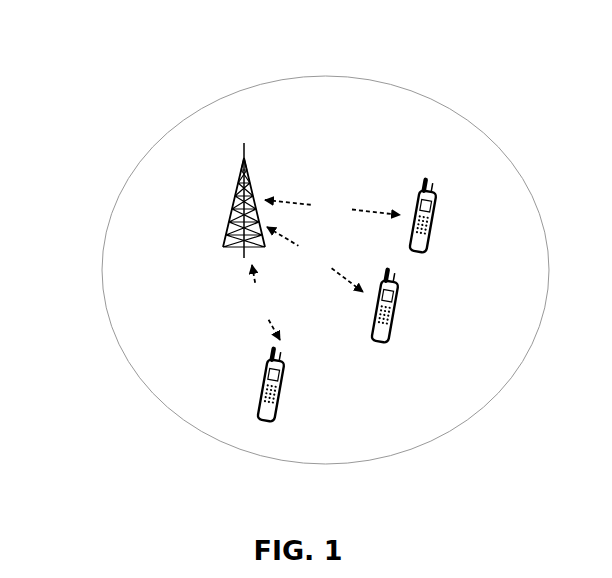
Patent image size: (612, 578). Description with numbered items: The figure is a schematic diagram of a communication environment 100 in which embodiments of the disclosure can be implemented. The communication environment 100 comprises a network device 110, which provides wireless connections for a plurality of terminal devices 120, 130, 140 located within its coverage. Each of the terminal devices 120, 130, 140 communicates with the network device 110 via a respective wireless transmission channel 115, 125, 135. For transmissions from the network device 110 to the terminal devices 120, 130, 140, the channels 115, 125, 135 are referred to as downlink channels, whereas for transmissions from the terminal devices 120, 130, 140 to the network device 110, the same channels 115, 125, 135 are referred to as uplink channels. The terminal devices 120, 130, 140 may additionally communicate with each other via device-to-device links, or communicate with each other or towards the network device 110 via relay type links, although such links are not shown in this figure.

The communication environment 100 is at (148, 48).
The network device 110 is at (246, 166).
The terminal device 120 is at (432, 200).
The terminal device 130 is at (394, 303).
The terminal device 140 is at (282, 399).
The wireless transmission channel 115 is at (332, 207).
The wireless transmission channel 125 is at (315, 259).
The wireless transmission channel 135 is at (263, 302).